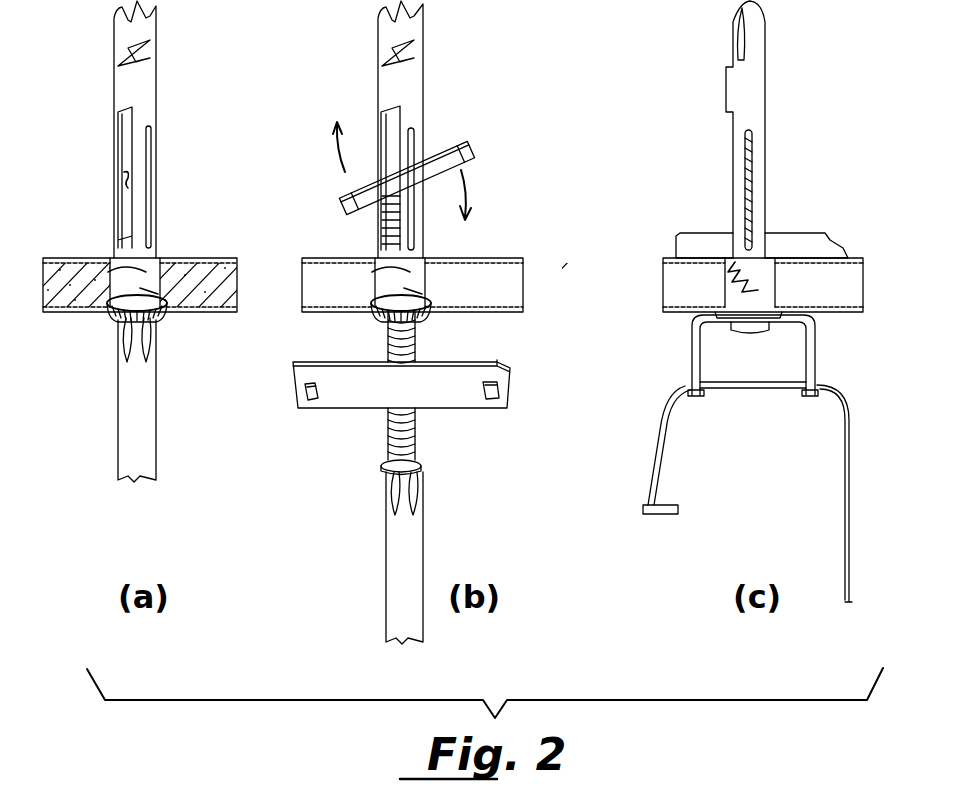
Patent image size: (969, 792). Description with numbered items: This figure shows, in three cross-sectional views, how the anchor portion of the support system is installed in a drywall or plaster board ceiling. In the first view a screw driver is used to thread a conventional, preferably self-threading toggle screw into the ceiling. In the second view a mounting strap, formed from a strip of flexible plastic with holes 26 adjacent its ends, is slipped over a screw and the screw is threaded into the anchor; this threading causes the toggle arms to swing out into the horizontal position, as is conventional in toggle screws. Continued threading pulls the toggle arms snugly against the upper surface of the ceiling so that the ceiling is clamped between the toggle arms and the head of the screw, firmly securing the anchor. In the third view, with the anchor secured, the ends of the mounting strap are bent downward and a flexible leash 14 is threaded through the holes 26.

The flexible leash 14 is at (852, 512).
The holes 26 is at (303, 392).